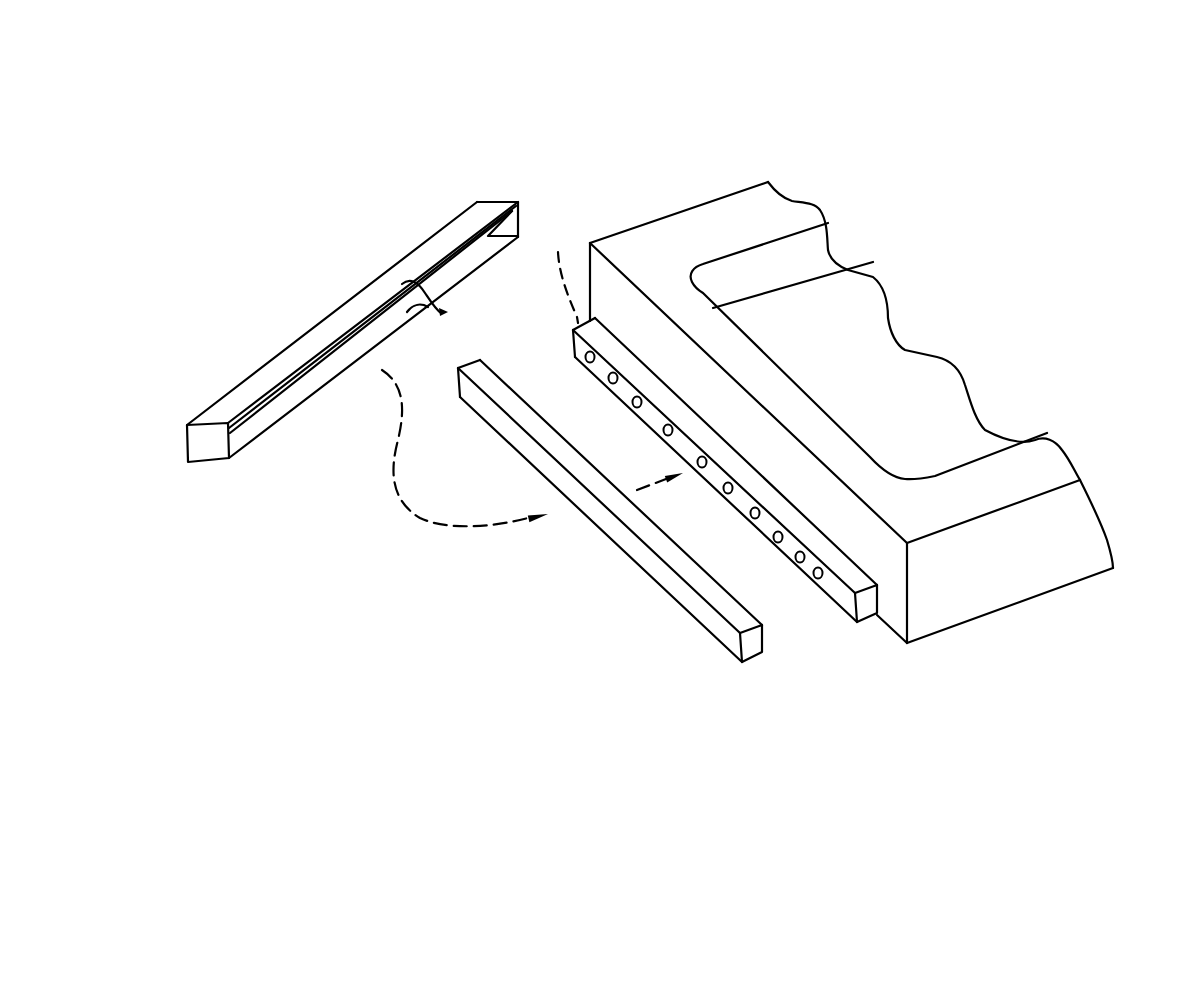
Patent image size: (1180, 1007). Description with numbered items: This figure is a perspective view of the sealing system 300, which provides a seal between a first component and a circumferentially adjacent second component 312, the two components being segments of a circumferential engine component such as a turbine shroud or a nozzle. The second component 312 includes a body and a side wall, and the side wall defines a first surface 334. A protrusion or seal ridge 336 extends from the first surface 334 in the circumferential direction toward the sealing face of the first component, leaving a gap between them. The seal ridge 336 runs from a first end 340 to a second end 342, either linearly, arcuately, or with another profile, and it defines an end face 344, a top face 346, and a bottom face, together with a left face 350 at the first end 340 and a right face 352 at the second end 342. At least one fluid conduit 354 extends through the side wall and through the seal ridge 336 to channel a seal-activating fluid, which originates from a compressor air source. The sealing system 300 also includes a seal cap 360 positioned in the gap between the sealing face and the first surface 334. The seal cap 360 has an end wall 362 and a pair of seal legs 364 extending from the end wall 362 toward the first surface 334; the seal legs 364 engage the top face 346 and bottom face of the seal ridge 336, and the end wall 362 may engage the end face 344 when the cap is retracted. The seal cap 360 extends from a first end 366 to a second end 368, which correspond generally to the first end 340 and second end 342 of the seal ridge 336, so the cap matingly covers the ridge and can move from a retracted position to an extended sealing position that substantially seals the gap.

The sealing system 300 is at (623, 125).
The second component 312 is at (1058, 573).
The first surface 334 is at (596, 264).
The seal ridge 336 is at (845, 598).
The first end 340 is at (558, 318).
The second end 342 is at (869, 648).
The end face 344 is at (625, 388).
The top face 346 is at (815, 510).
The left face 350 is at (557, 270).
The right face 352 is at (870, 607).
The fluid conduit 354 is at (730, 490).
The seal cap 360 is at (287, 363).
The end wall 362 is at (727, 633).
The seal legs 364 is at (450, 309).
The first end 366 is at (518, 202).
The second end 368 is at (198, 448).